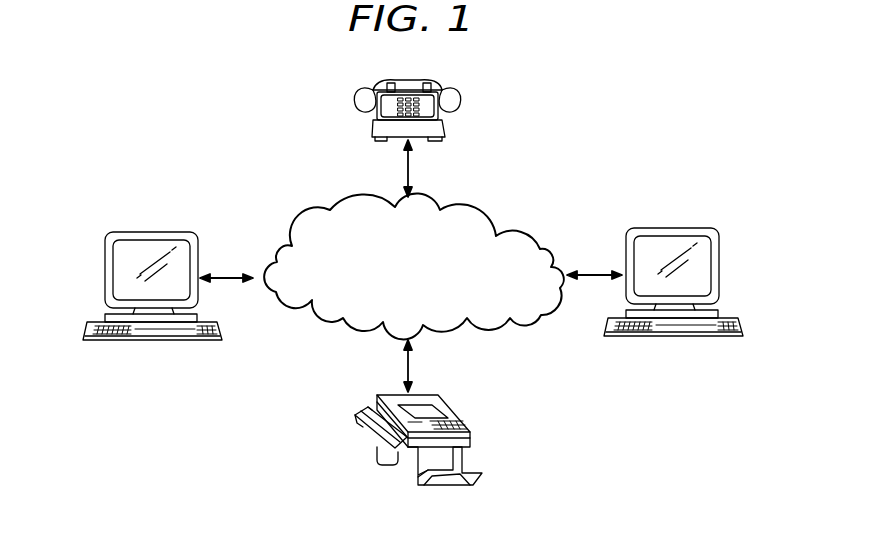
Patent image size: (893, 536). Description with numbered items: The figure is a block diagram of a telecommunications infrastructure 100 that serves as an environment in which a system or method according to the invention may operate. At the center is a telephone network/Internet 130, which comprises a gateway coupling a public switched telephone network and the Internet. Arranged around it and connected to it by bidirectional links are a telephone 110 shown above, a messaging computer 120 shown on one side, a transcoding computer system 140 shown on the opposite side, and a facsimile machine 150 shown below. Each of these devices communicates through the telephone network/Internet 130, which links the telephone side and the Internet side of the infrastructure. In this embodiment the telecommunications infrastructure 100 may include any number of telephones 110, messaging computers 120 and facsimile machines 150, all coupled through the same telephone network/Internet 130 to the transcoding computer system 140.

The telecommunications infrastructure 100 is at (613, 69).
The telephone 110 is at (464, 92).
The messaging computer 120 is at (105, 270).
The telephone network/Internet 130 is at (486, 200).
The transcoding computer system 140 is at (723, 268).
The facsimile machine 150 is at (459, 407).